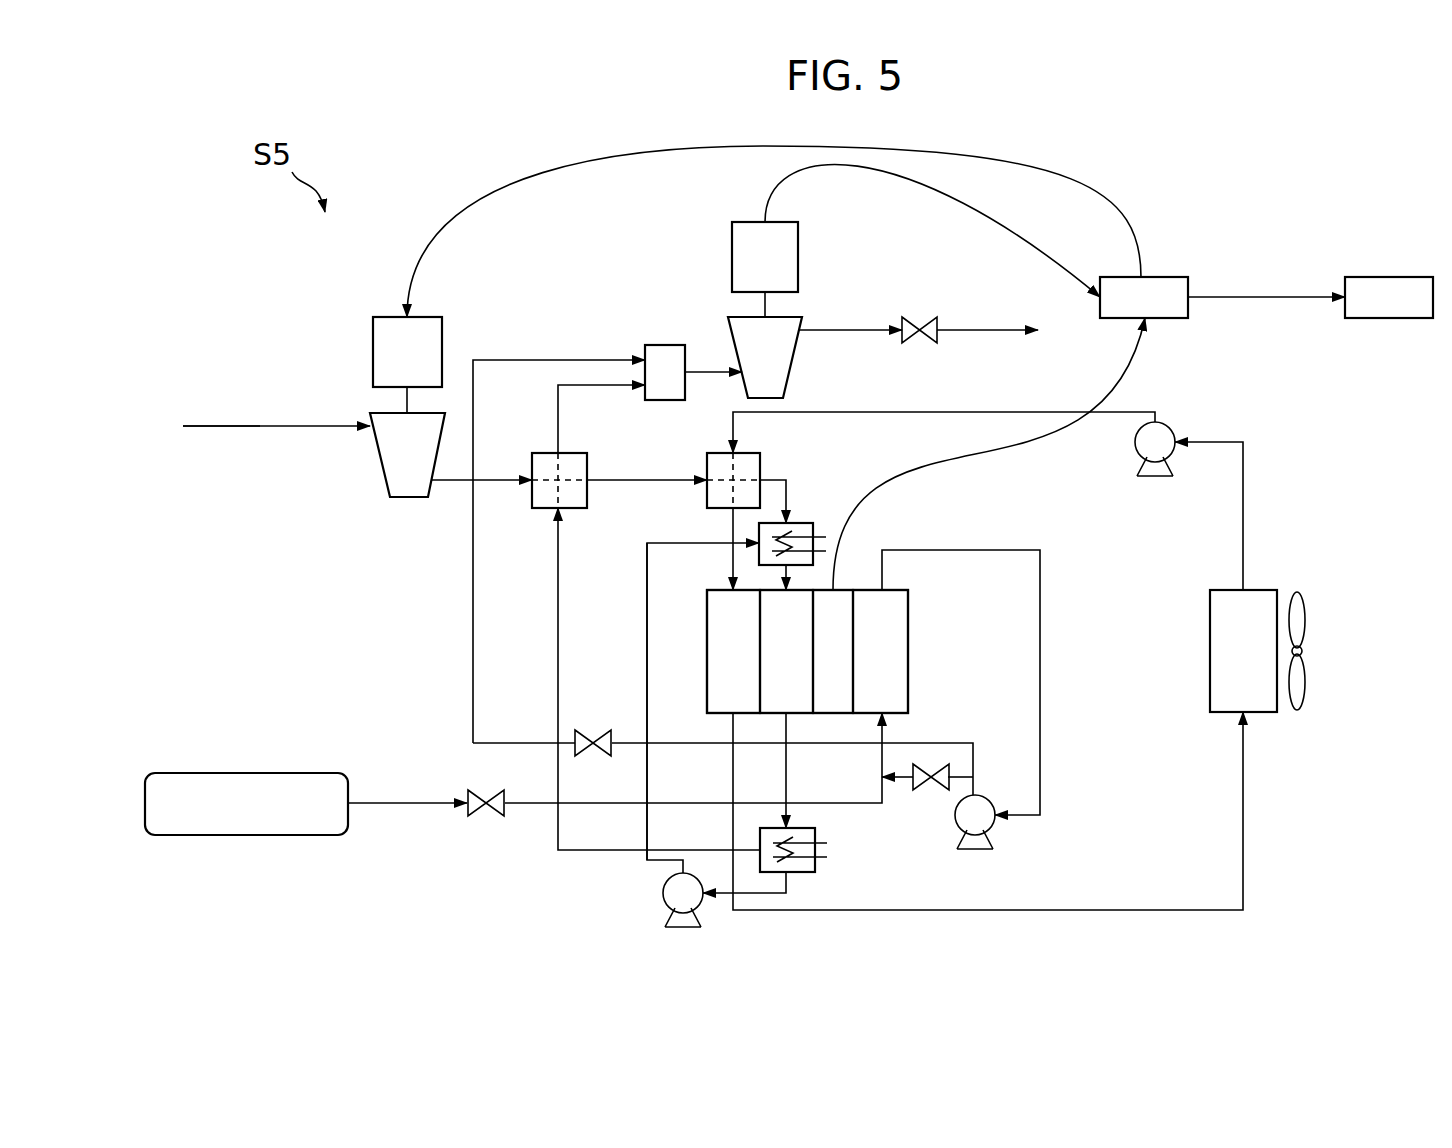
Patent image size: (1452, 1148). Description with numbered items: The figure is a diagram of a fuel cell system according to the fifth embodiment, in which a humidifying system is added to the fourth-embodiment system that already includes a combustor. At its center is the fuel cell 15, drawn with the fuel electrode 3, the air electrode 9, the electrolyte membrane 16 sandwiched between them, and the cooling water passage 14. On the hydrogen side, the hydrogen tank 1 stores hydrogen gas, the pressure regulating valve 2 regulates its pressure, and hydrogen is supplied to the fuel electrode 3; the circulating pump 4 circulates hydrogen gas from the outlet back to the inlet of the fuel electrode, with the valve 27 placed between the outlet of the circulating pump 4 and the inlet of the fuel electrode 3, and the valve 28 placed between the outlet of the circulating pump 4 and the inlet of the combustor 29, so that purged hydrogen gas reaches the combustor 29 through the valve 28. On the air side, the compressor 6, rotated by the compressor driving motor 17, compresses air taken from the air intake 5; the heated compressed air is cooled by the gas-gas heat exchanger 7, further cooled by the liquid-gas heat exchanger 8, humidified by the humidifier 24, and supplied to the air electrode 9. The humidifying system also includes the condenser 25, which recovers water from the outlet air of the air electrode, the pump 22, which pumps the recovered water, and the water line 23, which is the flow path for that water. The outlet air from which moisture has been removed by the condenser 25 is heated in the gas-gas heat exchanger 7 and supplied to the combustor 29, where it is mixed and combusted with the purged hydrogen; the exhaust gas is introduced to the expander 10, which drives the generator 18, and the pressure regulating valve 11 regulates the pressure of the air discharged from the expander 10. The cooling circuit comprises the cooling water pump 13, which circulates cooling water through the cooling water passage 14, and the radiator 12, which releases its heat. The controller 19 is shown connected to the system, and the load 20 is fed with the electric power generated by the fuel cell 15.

The hydrogen tank 1 is at (246, 773).
The pressure regulating valve 2 is at (478, 795).
The fuel electrode 3 is at (880, 651).
The circulating pump 4 is at (985, 797).
The air intake 5 is at (211, 427).
The compressor 6 is at (378, 466).
The gas-gas heat exchanger 7 is at (541, 453).
The liquid-gas heat exchanger 8 is at (707, 463).
The air electrode 9 is at (786, 651).
The expander 10 is at (802, 358).
The pressure regulating valve 11 is at (920, 318).
The radiator 12 is at (1210, 623).
The cooling water pump 13 is at (1155, 477).
The cooling water passage 14 is at (733, 651).
The fuel cell 15 is at (914, 647).
The electrolyte membrane 16 is at (833, 651).
The compressor driving motor 17 is at (373, 338).
The generator 18 is at (732, 248).
The controller 19 is at (1163, 277).
The load 20 is at (1400, 277).
The pump 22 is at (663, 893).
The water line 23 is at (647, 607).
The humidifier 24 is at (795, 523).
The condenser 25 is at (806, 872).
The valve 27 is at (925, 791).
The valve 28 is at (594, 756).
The combustor 29 is at (662, 345).